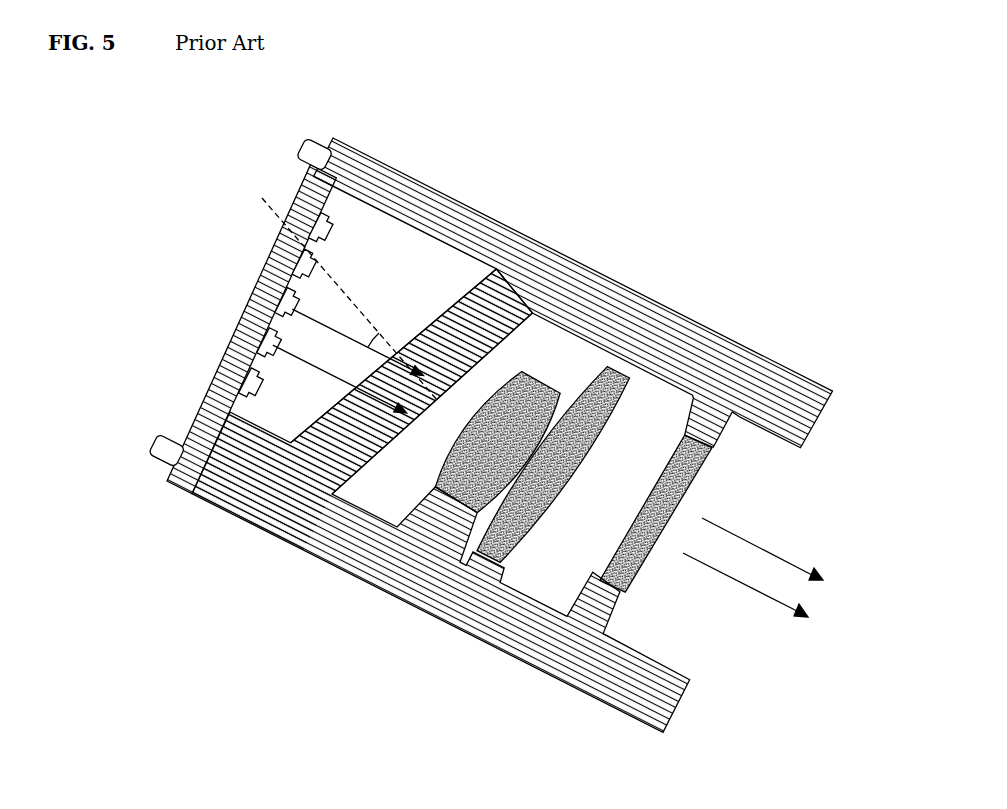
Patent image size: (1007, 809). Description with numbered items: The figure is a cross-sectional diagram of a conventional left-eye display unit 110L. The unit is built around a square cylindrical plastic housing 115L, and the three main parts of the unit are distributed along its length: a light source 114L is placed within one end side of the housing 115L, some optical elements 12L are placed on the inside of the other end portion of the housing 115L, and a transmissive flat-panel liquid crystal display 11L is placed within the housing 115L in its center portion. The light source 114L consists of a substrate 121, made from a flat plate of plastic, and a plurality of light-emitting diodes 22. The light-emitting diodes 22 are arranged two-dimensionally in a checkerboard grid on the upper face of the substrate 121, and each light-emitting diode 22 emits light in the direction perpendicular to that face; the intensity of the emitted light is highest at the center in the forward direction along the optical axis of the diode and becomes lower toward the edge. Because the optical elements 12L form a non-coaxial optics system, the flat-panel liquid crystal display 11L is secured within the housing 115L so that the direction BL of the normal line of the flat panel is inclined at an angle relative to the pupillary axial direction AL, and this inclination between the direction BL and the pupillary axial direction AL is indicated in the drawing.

The left-eye display unit 110L is at (512, 180).
The transmissive flat-panel liquid crystal display 11L is at (365, 392).
The square cylindrical plastic housing 115L is at (502, 462).
The optical elements 12L is at (593, 573).
The light source 114L is at (122, 308).
The light-emitting diodes 22 is at (286, 306).
The substrate 121 is at (248, 316).
The pupillary axial direction AL is at (290, 305).
The direction of the normal line of the flat-panel BL is at (335, 290).